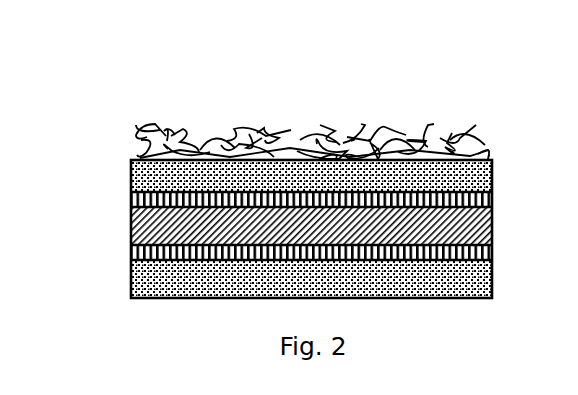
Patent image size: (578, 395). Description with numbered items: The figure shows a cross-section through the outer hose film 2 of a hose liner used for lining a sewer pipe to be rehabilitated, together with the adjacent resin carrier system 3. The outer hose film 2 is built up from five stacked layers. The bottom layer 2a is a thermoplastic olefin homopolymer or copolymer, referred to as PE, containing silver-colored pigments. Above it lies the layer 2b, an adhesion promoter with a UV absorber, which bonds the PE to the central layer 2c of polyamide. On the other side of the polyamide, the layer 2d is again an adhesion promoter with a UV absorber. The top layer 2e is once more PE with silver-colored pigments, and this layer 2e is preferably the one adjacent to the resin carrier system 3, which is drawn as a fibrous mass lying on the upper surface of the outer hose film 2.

The outer hose film 2 is at (513, 157).
The layer 2a is at (131, 277).
The layer 2b is at (131, 253).
The layer 2c is at (131, 228).
The layer 2d is at (131, 199).
The layer 2e is at (131, 173).
The resin carrier system 3 is at (385, 143).